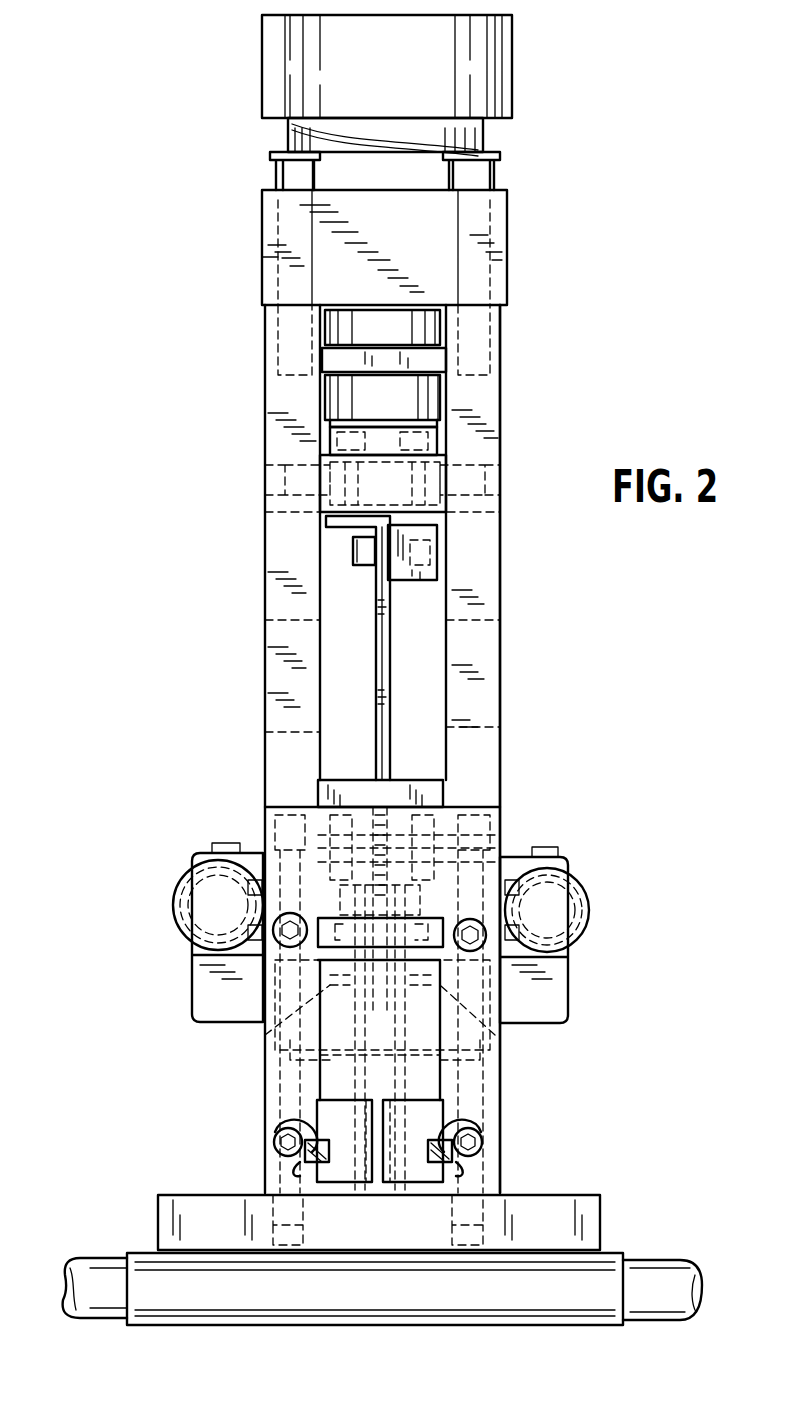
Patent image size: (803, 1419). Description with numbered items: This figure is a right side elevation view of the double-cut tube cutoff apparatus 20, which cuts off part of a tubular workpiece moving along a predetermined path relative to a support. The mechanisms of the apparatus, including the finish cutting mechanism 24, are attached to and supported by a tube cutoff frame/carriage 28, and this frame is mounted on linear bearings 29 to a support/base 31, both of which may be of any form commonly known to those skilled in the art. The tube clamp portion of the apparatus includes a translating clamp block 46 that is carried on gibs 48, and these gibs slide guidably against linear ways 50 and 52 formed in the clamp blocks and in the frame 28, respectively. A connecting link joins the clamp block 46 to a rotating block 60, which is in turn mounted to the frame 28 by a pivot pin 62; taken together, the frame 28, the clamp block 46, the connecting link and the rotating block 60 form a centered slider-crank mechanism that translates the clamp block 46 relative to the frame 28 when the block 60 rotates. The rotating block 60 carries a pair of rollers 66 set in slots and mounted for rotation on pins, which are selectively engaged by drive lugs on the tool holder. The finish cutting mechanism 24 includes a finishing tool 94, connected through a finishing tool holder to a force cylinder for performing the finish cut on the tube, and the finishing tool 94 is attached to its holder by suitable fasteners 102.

The tube cutoff apparatus 20 is at (600, 311).
The finish cutting mechanism 24 is at (480, 567).
The tube cutoff frame/carriage 28 is at (505, 696).
The linear bearings 29 is at (540, 1305).
The support/base 31 is at (108, 1310).
The translating clamp block 46 is at (362, 1137).
The gibs 48 is at (282, 1154).
The linear way 50 is at (298, 1170).
The linear way 52 is at (282, 1128).
The rotating block 60 is at (425, 1085).
The pivot pin 62 is at (492, 1058).
The rollers 66 is at (268, 1022).
The finishing tool 94 is at (385, 698).
The fasteners 102 is at (365, 566).